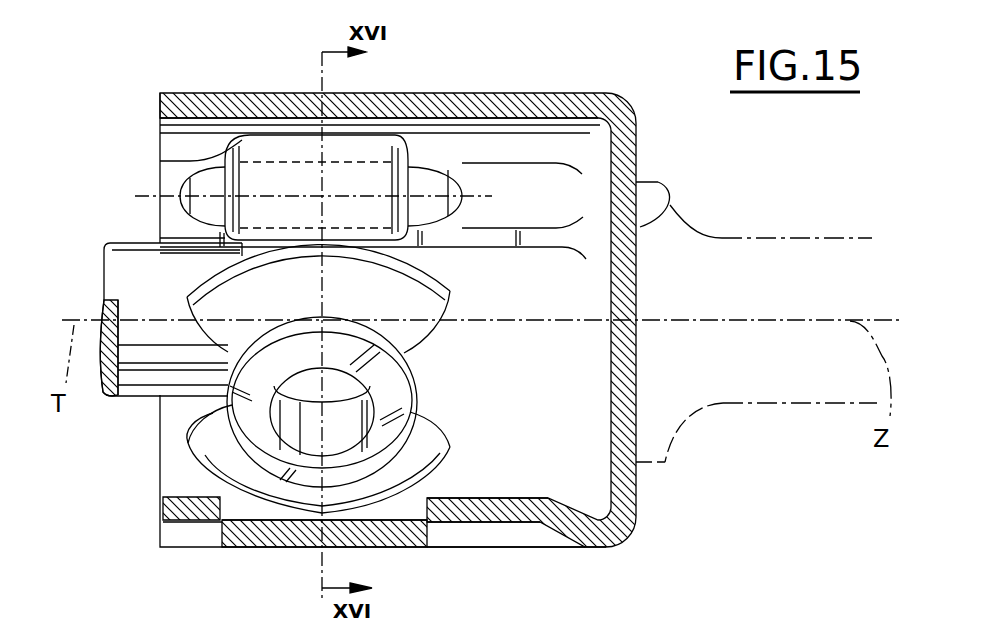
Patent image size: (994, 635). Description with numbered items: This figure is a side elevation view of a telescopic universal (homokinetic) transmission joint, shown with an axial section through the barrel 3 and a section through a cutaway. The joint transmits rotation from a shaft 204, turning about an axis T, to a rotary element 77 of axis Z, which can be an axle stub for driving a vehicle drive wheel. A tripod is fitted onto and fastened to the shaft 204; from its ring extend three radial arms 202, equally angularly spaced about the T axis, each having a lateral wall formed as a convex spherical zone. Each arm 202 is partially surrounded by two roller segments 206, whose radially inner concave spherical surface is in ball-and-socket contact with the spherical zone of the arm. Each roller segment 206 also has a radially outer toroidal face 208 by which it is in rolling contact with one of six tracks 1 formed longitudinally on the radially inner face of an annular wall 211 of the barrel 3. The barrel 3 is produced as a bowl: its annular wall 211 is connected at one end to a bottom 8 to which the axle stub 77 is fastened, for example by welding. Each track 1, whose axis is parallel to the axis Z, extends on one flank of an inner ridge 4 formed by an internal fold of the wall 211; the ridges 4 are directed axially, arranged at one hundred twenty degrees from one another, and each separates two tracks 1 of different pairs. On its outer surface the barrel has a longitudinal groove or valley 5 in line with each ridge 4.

The track 1 is at (162, 207).
The barrel 3 is at (258, 78).
The inner ridge 4 is at (463, 503).
The longitudinal groove or valley 5 is at (498, 508).
The bottom 8 is at (663, 200).
The rotary element 77 is at (764, 404).
The radial arm 202 is at (397, 135).
The shaft 204 is at (125, 270).
The roller segment 206 is at (443, 446).
The radially outer toroidal face 208 is at (204, 468).
The annular wall 211 is at (210, 108).